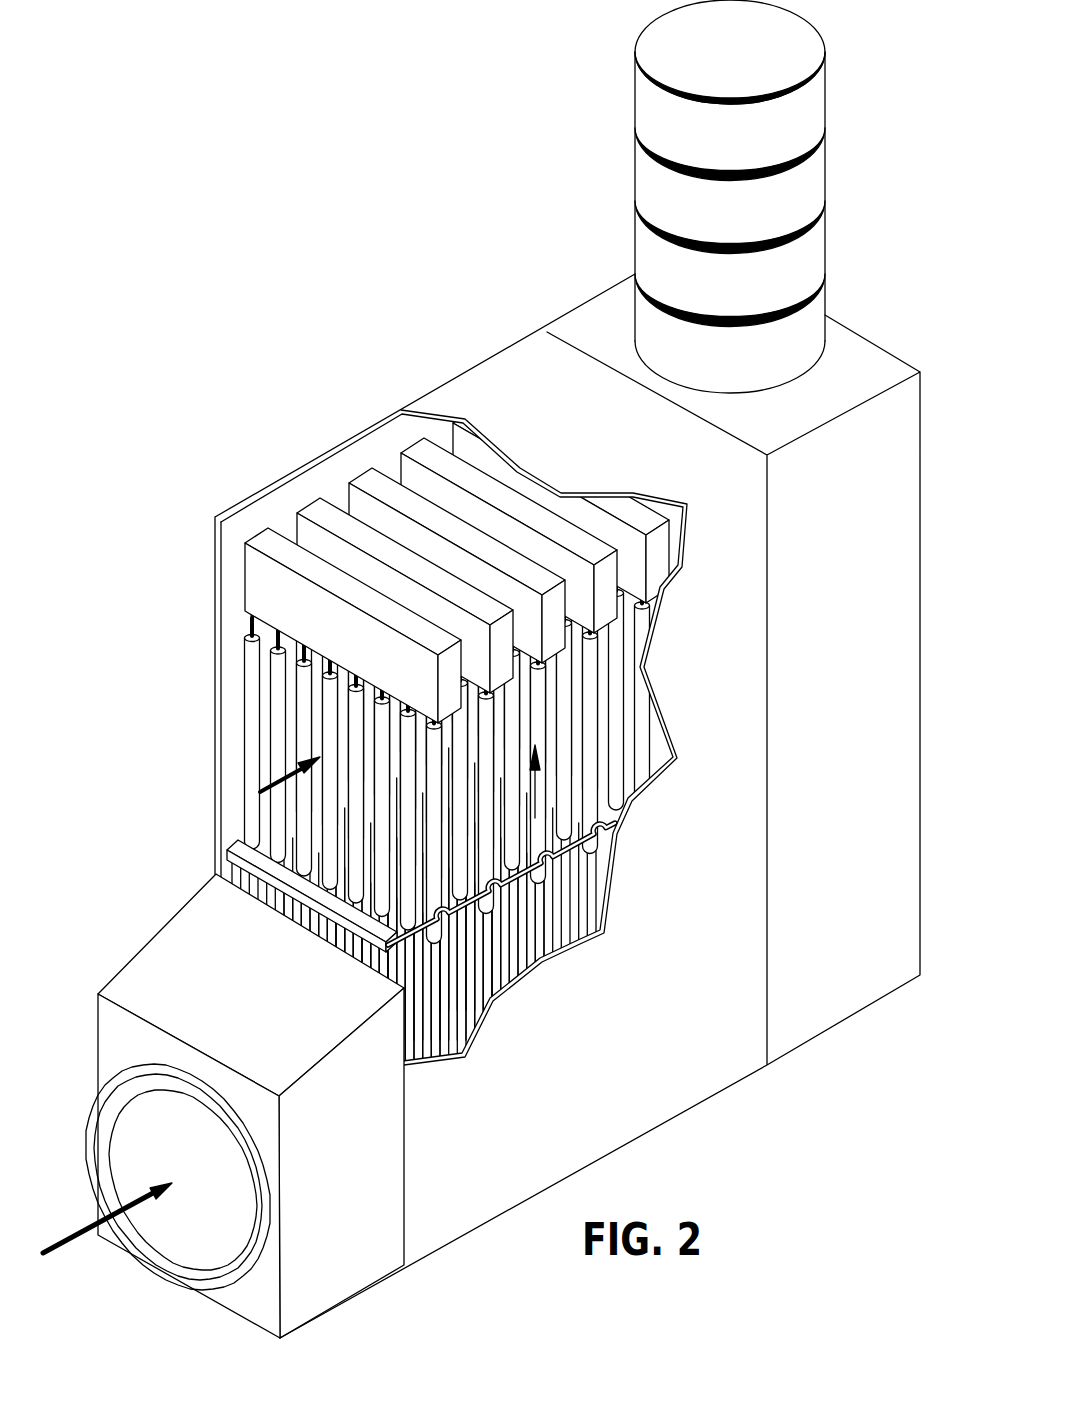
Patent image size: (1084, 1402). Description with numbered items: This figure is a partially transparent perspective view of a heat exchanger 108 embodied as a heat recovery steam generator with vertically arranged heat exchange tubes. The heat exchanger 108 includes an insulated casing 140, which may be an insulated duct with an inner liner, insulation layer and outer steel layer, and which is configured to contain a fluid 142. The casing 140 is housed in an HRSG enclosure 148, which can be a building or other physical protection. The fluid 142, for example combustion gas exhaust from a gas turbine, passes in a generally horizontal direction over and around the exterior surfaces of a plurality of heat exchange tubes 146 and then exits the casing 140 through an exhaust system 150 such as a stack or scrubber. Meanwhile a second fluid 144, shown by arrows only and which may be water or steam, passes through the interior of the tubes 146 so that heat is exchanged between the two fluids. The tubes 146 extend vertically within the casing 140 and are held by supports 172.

The heat exchanger 108 is at (668, 1004).
The insulated casing 140 is at (576, 1089).
The fluid 142 is at (277, 775).
The fluid 144 is at (538, 790).
The heat exchange tubes 146 is at (292, 728).
The HRSG enclosure 148 is at (478, 354).
The exhaust system 150 is at (867, 330).
The supports 172 is at (235, 865).